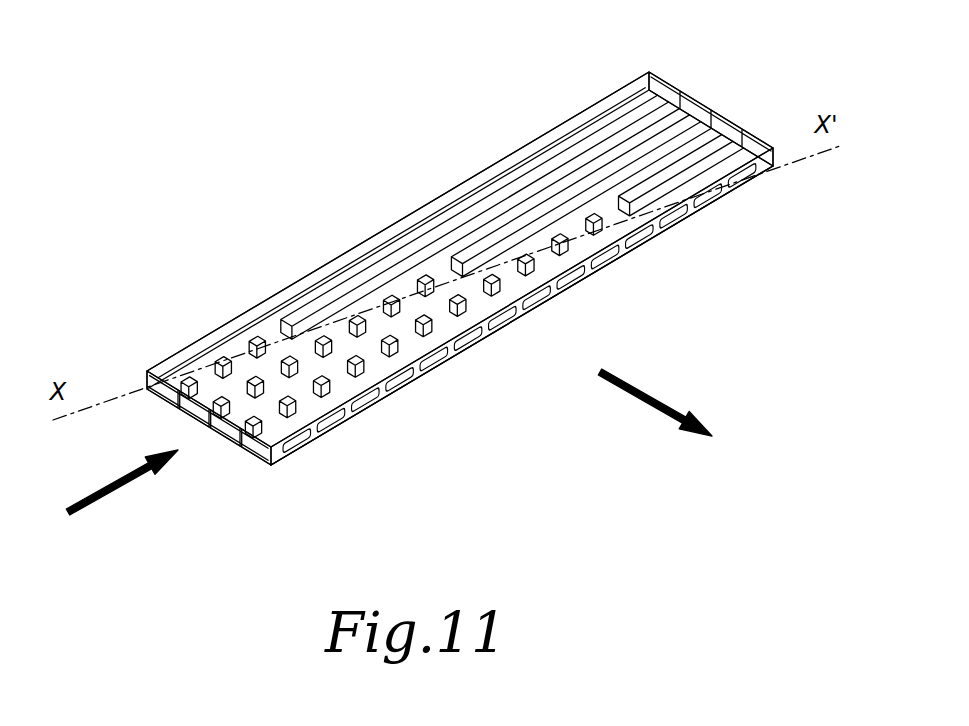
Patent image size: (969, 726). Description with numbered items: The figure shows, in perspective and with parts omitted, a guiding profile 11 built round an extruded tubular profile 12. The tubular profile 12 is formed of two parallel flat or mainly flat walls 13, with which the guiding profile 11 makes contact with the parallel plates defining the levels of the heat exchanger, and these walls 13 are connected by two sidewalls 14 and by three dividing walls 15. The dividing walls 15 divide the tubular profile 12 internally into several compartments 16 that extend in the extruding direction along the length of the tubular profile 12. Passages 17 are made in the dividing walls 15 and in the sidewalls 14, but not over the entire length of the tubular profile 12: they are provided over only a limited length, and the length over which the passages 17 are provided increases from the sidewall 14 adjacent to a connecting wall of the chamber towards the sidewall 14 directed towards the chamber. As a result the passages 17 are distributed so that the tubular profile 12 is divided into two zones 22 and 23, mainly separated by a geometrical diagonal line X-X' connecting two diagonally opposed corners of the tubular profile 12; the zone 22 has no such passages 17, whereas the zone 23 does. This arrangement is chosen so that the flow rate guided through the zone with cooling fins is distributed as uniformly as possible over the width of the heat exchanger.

The guiding profile 11 is at (207, 117).
The tubular profile 12 is at (492, 162).
The flat walls 13 is at (625, 250).
The sidewalls 14 is at (398, 396).
The dividing walls 15 is at (565, 207).
The compartments 16 is at (258, 458).
The passages 17 is at (450, 355).
The zone 22 is at (724, 102).
The zone 23 is at (727, 226).